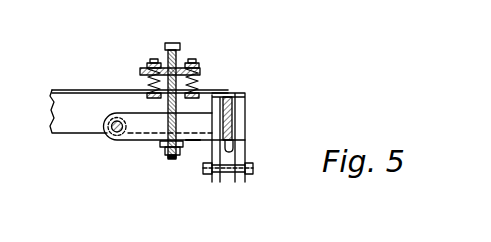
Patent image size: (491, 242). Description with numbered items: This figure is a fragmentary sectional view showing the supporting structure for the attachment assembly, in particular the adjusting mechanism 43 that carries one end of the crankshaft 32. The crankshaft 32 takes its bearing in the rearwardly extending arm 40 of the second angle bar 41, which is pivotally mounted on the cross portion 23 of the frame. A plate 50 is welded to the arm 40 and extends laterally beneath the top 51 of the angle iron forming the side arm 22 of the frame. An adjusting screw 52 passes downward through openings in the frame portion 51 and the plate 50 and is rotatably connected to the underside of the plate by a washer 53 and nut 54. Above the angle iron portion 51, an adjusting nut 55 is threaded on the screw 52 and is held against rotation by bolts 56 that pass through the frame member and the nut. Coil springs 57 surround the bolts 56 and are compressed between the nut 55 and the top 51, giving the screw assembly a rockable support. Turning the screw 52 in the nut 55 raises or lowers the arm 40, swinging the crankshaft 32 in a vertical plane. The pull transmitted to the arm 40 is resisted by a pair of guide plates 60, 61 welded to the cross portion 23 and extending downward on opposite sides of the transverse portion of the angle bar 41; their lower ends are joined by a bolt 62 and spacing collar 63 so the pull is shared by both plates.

The side arm 22 is at (66, 132).
The cross portion 23 is at (246, 108).
The crankshaft 32 is at (110, 138).
The rearwardly extending arm 40 is at (135, 143).
The second angle bar 41 is at (236, 154).
The adjusting mechanism 43 is at (172, 42).
The plate 50 is at (192, 144).
The top of the angle iron 51 is at (75, 90).
The adjusting screw 52 is at (178, 55).
The washer 53 is at (160, 148).
The nut 54 is at (182, 152).
The adjusting nut 55 is at (148, 70).
The bolts 56 is at (155, 62).
The coil springs 57 is at (148, 80).
The guide plate 60 is at (217, 182).
The guide plate 61 is at (246, 125).
The bolt 62 is at (253, 168).
The spacing collar 63 is at (229, 181).